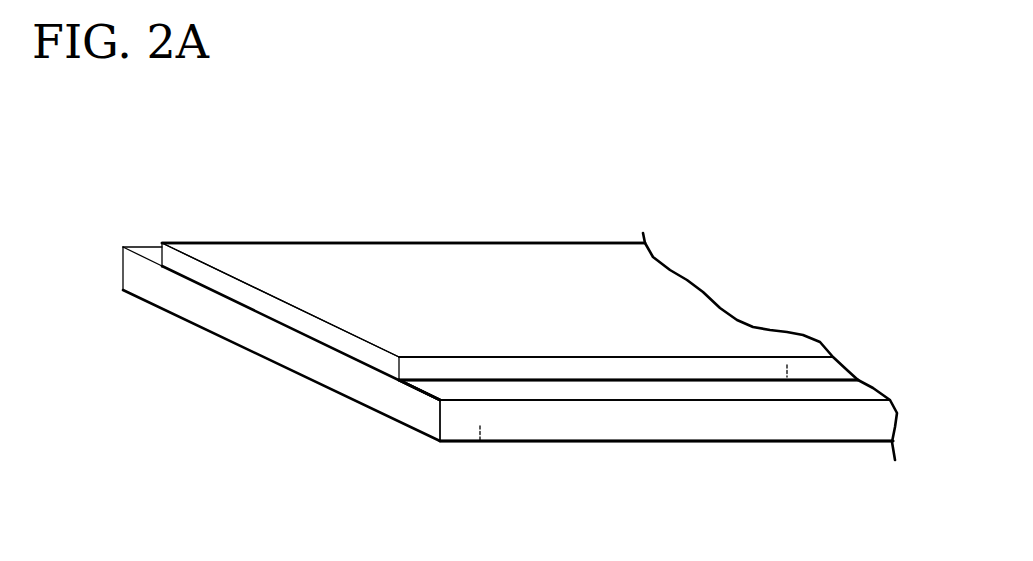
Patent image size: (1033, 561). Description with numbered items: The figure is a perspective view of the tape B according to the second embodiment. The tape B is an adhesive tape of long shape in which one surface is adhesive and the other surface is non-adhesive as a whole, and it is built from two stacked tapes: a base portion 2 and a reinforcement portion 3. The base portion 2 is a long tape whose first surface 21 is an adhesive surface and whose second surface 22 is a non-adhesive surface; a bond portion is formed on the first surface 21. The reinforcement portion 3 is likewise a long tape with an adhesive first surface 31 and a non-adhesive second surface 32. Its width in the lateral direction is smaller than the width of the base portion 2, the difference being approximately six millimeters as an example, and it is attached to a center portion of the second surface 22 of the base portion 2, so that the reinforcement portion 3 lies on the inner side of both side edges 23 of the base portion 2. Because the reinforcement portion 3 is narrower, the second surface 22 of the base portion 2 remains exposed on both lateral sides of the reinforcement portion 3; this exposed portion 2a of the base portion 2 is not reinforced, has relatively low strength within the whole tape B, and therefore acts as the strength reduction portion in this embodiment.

The tape B is at (222, 197).
The base portion 2 is at (223, 321).
The exposed portion 2a is at (545, 392).
The first surface 21 is at (478, 446).
The second surface 22 is at (453, 393).
The side edges 23 is at (533, 422).
The reinforcement portion 3 is at (330, 243).
The first surface 31 is at (788, 378).
The second surface 32 is at (712, 328).